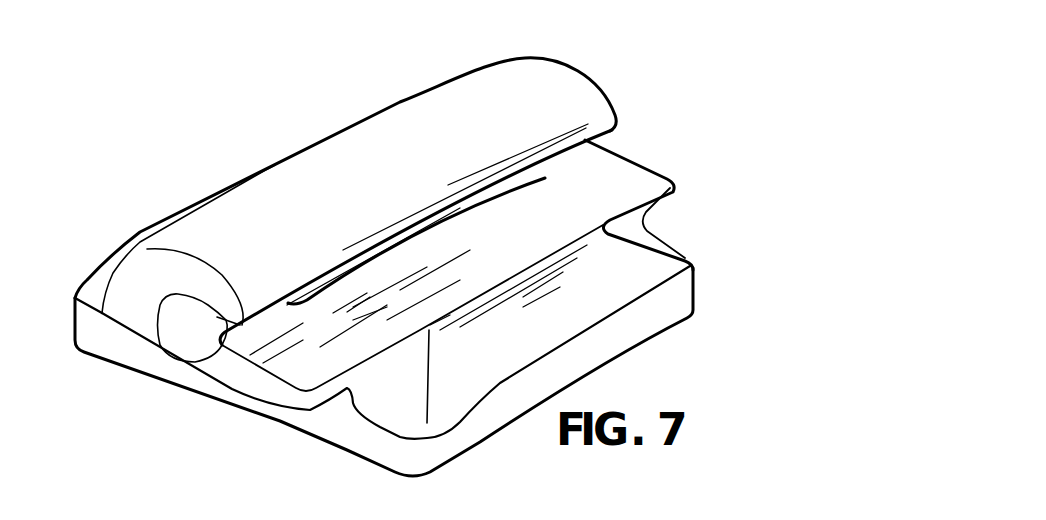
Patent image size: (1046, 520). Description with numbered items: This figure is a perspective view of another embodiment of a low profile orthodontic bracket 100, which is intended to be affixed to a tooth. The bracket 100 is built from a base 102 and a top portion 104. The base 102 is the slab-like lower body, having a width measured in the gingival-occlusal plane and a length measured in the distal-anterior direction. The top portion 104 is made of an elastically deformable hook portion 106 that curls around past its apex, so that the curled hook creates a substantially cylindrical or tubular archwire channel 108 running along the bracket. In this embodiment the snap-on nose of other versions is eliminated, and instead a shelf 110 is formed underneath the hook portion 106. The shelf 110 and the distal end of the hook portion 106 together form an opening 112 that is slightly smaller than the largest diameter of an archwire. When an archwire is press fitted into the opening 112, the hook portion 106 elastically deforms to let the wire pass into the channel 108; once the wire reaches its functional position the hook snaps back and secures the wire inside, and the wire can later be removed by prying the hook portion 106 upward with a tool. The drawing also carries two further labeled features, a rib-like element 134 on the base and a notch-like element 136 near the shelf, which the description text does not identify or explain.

The bracket 100 is at (263, 129).
The base 102 is at (686, 293).
The top portion 104 is at (132, 327).
The hook portion 106 is at (541, 76).
The archwire channel 108 is at (190, 347).
The shelf 110 is at (632, 182).
The opening 112 is at (463, 210).
The rib 134 is at (385, 410).
The notch 136 is at (637, 228).